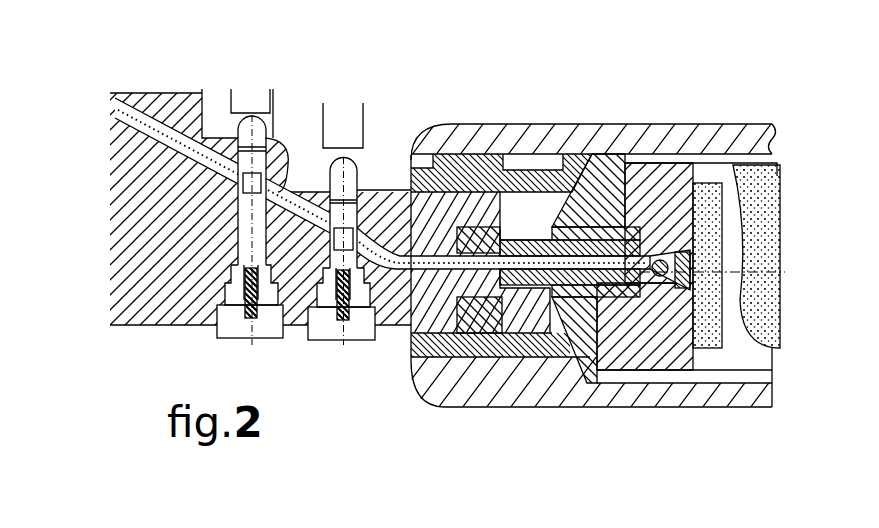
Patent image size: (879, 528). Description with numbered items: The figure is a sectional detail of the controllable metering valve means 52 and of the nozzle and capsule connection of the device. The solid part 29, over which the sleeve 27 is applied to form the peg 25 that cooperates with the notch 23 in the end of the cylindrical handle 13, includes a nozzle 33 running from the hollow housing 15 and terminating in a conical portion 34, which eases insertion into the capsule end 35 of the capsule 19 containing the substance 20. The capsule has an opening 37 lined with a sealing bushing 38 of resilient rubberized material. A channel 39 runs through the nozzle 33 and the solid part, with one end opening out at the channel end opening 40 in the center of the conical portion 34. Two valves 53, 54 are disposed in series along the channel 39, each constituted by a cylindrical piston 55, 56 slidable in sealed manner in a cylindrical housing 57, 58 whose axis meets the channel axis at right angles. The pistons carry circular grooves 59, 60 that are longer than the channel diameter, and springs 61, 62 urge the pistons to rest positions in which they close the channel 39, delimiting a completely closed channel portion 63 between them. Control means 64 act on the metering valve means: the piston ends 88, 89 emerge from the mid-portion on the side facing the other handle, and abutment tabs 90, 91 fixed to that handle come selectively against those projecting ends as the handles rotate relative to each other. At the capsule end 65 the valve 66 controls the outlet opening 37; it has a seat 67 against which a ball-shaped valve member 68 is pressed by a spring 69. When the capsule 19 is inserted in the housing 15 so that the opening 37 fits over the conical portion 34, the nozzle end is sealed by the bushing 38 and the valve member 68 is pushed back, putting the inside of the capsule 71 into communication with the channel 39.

The cylindrical handle 13 is at (591, 323).
The hollow housing 15 is at (712, 359).
The capsule 19 is at (752, 395).
The substance 20 is at (752, 232).
The notch 23 is at (540, 163).
The peg 25 is at (480, 140).
The sleeve 27 is at (414, 180).
The solid part 29 is at (133, 305).
The nozzle 33 is at (519, 322).
The conical portion 34 is at (600, 180).
The capsule end 35 is at (590, 383).
The opening 37 is at (585, 232).
The sealing bushing 38 is at (502, 280).
The channel 39 is at (137, 100).
The channel end opening 40 is at (652, 250).
The controllable metering valve means 52 is at (322, 190).
The first valve 53 is at (235, 228).
The second valve 54 is at (402, 188).
The cylindrical piston 55 is at (245, 238).
The cylindrical piston 56 is at (368, 300).
The cylindrical housing 57 is at (262, 250).
The cylindrical housing 58 is at (318, 300).
The circular groove 59 is at (270, 159).
The circular groove 60 is at (359, 184).
The spring 61 is at (230, 302).
The spring 62 is at (347, 312).
The closed channel portion 63 is at (285, 182).
The control means 64 is at (348, 107).
The capsule end 65 is at (640, 300).
The valve 66 is at (655, 300).
The seat 67 is at (668, 258).
The ball-shaped valve member 68 is at (676, 262).
The spring 69 is at (706, 250).
The inside of the capsule 71 is at (750, 243).
The piston end 88 is at (238, 127).
The piston end 89 is at (365, 146).
The abutment tab 90 is at (240, 90).
The abutment tab 91 is at (346, 100).